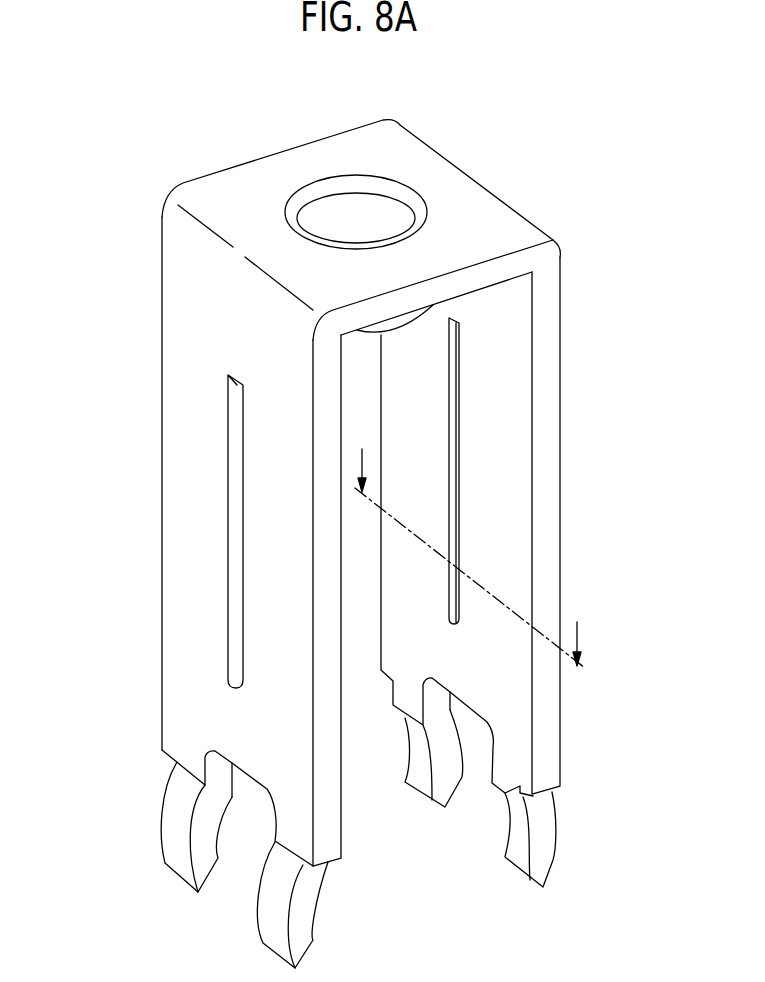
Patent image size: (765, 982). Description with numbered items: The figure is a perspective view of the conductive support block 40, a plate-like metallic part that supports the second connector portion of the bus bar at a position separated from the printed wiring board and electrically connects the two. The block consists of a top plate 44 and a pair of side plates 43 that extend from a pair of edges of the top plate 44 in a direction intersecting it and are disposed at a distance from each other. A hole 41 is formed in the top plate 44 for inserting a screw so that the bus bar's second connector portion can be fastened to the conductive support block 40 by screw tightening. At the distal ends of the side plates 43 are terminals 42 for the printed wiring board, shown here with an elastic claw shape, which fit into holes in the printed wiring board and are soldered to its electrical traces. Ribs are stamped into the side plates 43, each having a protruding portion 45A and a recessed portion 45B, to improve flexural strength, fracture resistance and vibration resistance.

The conductive support block 40 is at (170, 152).
The hole 41 is at (396, 193).
The terminals for the printed wiring board 42 is at (178, 823).
The side plates 43 is at (192, 350).
The top plate 44 is at (472, 223).
The protruding portion 45A is at (237, 492).
The recessed portion 45B is at (455, 462).